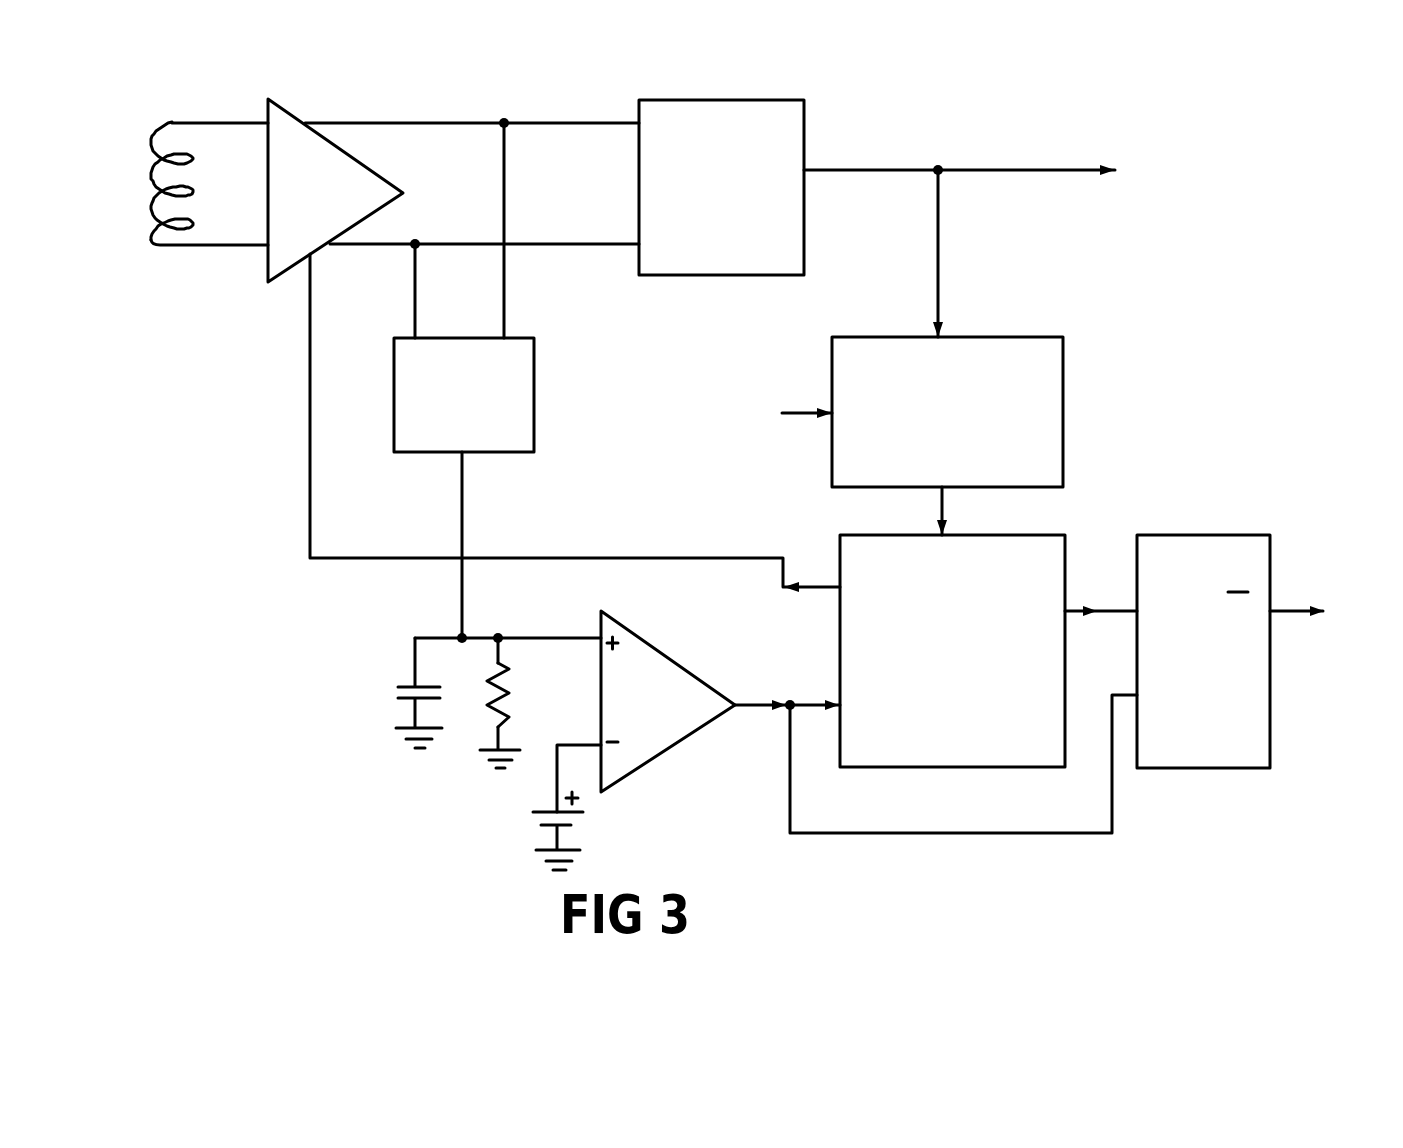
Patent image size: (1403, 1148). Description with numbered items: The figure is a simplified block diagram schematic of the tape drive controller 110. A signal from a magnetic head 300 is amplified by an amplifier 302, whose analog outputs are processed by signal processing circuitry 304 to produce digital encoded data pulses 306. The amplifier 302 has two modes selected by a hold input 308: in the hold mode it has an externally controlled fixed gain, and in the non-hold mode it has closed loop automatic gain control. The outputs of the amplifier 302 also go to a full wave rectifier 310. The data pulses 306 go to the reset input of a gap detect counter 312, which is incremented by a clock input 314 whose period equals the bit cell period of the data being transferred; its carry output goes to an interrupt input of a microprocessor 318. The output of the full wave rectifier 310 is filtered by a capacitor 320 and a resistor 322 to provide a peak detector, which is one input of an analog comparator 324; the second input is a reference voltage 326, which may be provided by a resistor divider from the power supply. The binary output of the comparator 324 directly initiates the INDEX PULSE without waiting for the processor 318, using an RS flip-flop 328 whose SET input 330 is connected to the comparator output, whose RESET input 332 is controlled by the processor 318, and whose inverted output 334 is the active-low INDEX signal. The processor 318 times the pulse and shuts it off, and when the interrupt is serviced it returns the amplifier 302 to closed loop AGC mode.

The tape drive controller 110 is at (250, 592).
The magnetic head 300 is at (156, 128).
The amplifier 302 is at (330, 190).
The signal processing circuitry 304 is at (744, 233).
The data pulses 306 is at (862, 170).
The hold input 308 is at (309, 370).
The full wave rectifier 310 is at (475, 422).
The gap detect counter 312 is at (996, 336).
The clock input 314 is at (804, 412).
The microprocessor 318 is at (964, 678).
The capacitor 320 is at (396, 691).
The resistor 322 is at (543, 678).
The analog comparator 324 is at (664, 704).
The reference voltage 326 is at (525, 815).
The RS flip-flop 328 is at (1227, 666).
The SET input 330 is at (1110, 783).
The RESET input 332 is at (1114, 610).
The inverted output 334 is at (1297, 608).